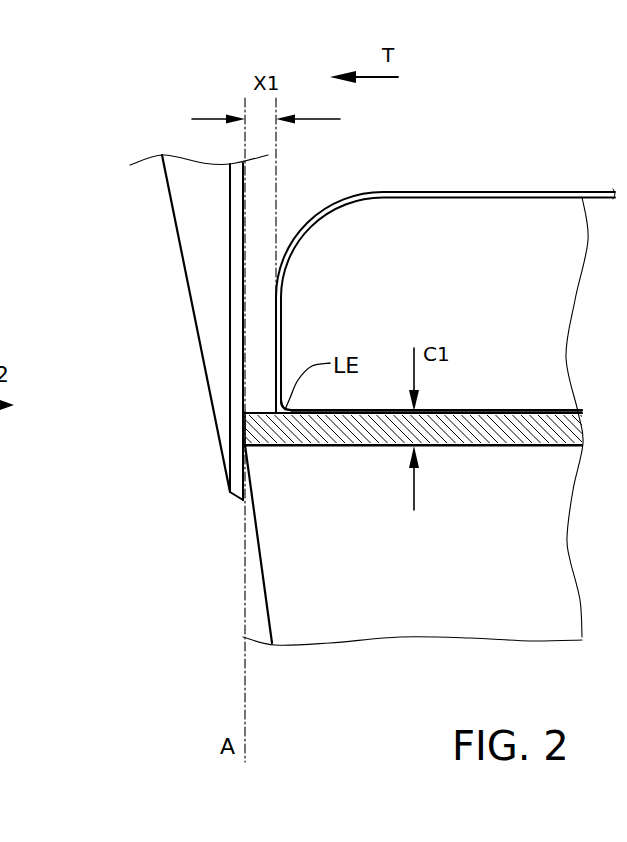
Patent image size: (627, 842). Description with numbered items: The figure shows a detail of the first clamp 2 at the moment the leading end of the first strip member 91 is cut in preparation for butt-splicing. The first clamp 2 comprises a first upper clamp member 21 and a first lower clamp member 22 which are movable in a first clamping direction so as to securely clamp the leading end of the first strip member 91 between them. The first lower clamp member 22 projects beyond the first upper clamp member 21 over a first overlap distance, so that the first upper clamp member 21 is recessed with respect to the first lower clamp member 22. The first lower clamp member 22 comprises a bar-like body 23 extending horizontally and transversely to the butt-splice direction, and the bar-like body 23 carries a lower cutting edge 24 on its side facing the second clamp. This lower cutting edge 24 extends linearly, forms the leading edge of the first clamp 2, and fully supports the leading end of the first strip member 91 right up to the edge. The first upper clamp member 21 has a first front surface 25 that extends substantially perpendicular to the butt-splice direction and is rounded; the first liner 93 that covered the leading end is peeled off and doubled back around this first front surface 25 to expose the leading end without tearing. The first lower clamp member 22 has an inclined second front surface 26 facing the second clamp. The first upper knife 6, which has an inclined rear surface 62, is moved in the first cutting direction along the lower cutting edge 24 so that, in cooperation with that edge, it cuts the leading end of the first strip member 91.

The first clamp 2 is at (539, 145).
The first upper knife 6 is at (197, 327).
The rear surface 62 is at (195, 318).
The first upper clamp member 21 is at (445, 272).
The first front surface 25 is at (282, 347).
The first lower clamp member 22 is at (415, 449).
The bar-like body 23 is at (455, 565).
The lower cutting edge 24 is at (248, 447).
The second front surface 26 is at (268, 600).
The first strip member 91 is at (412, 416).
The first liner 93 is at (493, 410).